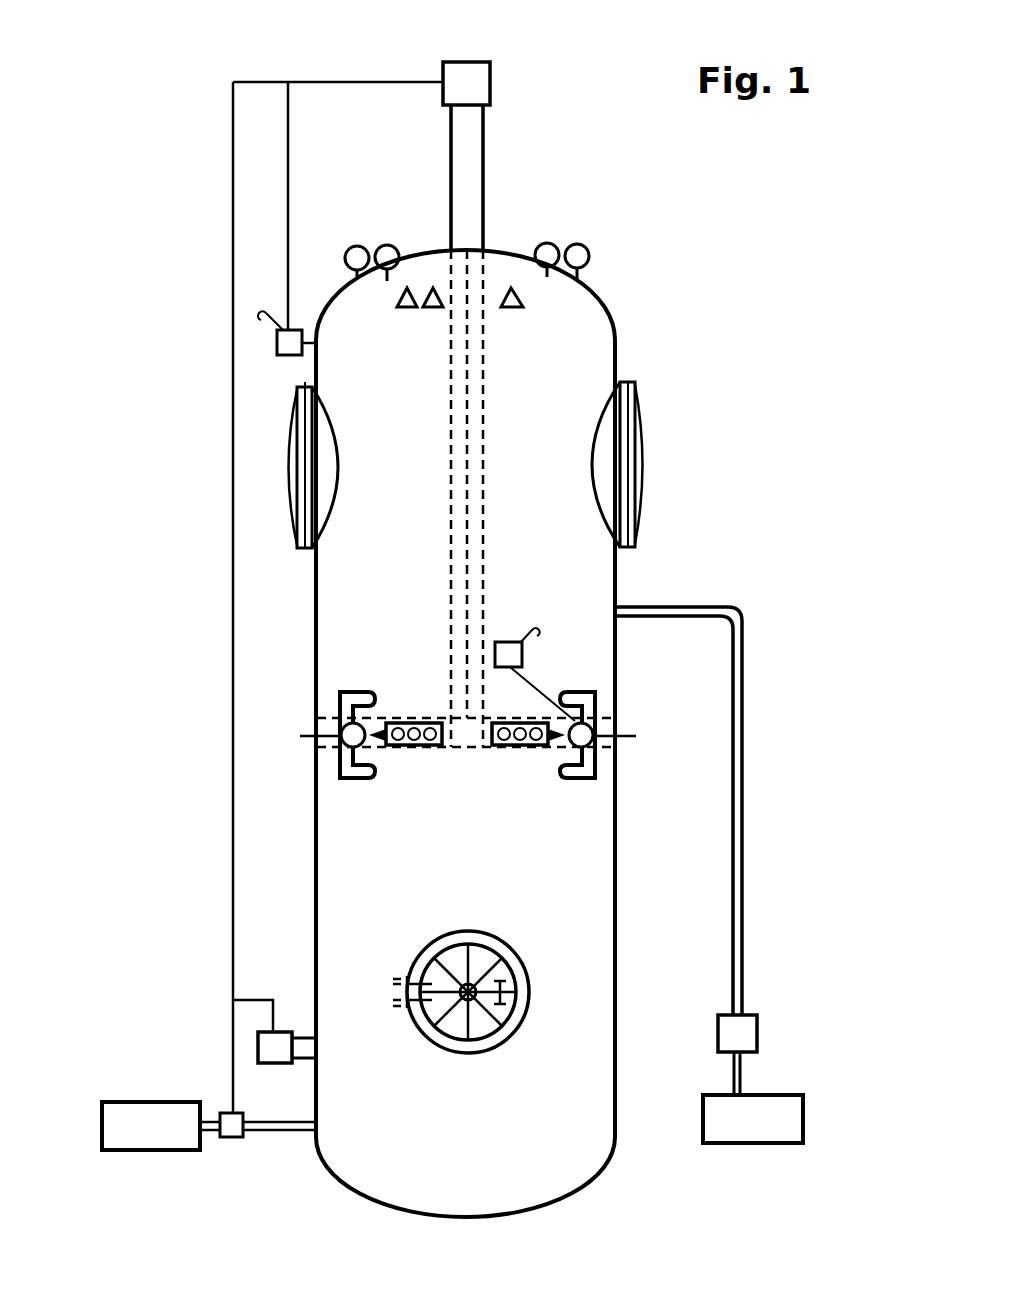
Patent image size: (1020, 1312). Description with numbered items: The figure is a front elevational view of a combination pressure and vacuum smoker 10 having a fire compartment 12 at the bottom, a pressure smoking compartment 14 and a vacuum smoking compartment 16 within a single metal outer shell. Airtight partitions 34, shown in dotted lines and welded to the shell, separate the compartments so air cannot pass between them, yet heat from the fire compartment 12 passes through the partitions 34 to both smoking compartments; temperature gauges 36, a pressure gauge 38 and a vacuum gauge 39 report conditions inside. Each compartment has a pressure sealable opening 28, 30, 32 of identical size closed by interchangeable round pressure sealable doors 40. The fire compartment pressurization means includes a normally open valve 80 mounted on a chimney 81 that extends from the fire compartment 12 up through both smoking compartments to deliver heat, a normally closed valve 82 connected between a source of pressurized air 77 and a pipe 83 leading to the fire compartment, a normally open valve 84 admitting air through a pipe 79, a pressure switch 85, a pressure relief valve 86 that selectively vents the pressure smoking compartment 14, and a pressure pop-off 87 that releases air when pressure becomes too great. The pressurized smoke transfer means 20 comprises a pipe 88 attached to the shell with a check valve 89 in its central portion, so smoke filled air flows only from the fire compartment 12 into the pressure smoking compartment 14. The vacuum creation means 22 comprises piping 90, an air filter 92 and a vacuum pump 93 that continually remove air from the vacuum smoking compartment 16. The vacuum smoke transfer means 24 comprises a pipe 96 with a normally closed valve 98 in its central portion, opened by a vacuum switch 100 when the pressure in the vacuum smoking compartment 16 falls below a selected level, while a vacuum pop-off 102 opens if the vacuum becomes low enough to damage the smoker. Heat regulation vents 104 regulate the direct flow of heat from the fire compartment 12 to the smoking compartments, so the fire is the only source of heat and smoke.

The combination pressure and vacuum smoker 10 is at (674, 271).
The fire compartment 12 is at (470, 1132).
The pressure smoking compartment 14 is at (388, 567).
The vacuum smoking compartment 16 is at (530, 412).
The pressurized smoke transfer means 20 is at (165, 393).
The vacuum creation means 22 is at (768, 603).
The vacuum smoke transfer means 24 is at (620, 687).
The pressure sealable opening 28 is at (512, 1049).
The pressure sealable opening 30 is at (268, 495).
The pressure sealable opening 32 is at (670, 465).
The airtight partitions 34 is at (468, 518).
The temperature gauges 36 is at (350, 248).
The pressure gauge 38 is at (390, 245).
The vacuum gauge 39 is at (581, 245).
The pressure sealable doors 40 is at (293, 535).
The source of pressurized air 77 is at (118, 1100).
The pipe 79 is at (302, 1060).
The normally open valve 80 is at (478, 62).
The chimney 81 is at (485, 148).
The normally closed valve 82 is at (226, 1140).
The pipe 83 is at (287, 1133).
The normally open valve 84 is at (280, 1030).
The pressure switch 85 is at (286, 357).
The pressure relief valve 86 is at (397, 302).
The pressure pop-off 87 is at (432, 308).
The pipe 88 is at (352, 690).
The check valve 89 is at (155, 858).
The piping 90 is at (745, 742).
The air filter 92 is at (758, 1032).
The vacuum pump 93 is at (740, 1146).
The pipe 96 is at (586, 780).
The normally closed valve 98 is at (620, 736).
The vacuum switch 100 is at (523, 655).
The vacuum pop-off 102 is at (522, 305).
The heat regulation vents 104 is at (502, 747).